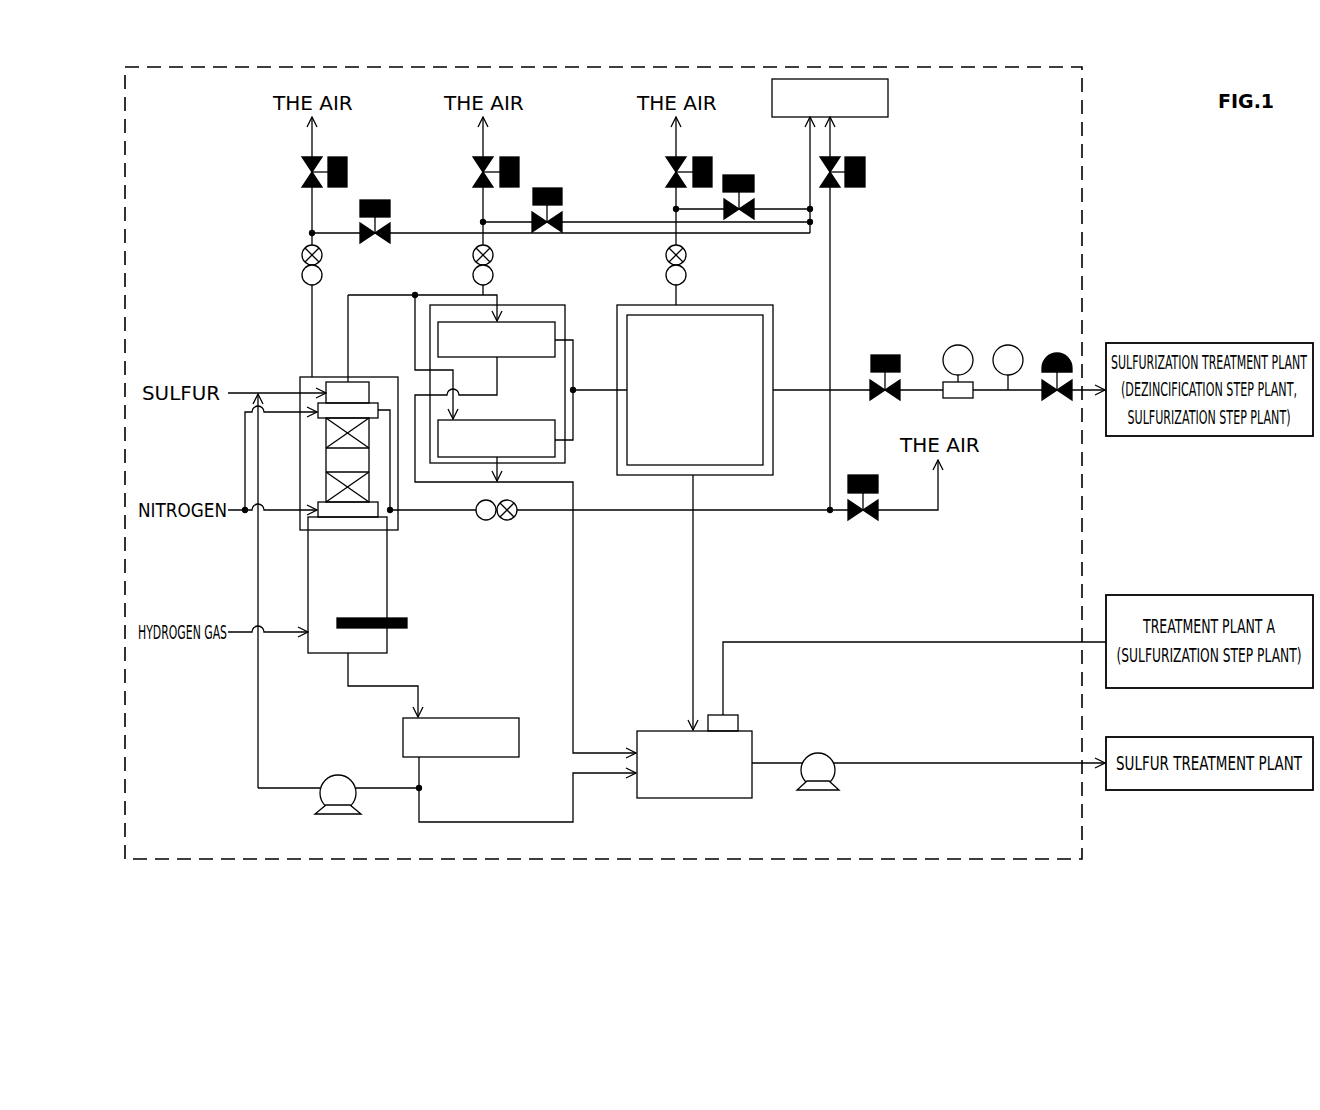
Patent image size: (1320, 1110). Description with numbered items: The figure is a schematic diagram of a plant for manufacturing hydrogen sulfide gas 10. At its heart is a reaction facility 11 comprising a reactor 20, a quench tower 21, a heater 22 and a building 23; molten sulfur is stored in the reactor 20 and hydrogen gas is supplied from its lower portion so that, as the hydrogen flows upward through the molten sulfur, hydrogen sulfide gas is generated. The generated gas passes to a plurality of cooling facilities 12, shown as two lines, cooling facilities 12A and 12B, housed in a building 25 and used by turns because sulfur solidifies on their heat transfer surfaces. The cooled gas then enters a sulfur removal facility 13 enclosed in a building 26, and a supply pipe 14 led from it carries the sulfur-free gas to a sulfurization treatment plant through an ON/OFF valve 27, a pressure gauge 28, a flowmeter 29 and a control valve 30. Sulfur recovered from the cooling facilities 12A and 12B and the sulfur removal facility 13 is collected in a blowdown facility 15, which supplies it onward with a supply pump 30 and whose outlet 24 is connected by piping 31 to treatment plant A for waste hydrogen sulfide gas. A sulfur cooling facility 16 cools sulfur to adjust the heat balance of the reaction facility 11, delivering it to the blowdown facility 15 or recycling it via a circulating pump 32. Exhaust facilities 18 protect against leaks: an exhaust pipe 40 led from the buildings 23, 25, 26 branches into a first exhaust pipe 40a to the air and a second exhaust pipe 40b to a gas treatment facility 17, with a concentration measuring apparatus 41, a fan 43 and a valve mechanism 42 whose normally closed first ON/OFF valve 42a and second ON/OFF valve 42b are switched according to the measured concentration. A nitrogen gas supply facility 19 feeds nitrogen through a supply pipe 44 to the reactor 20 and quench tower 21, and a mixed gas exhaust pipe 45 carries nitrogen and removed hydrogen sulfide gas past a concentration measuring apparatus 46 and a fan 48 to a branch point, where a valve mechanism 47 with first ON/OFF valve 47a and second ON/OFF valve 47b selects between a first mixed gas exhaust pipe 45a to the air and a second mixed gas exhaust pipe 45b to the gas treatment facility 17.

The plant for manufacturing hydrogen sulfide gas 10 is at (1032, 141).
The reaction facility 11 is at (376, 474).
The cooling facilities 12 is at (492, 507).
The cooling facility 12A is at (540, 383).
The cooling facility 12B is at (507, 358).
The sulfur removal facility 13 is at (626, 458).
The supply pipe 14 is at (845, 388).
The blowdown facility 15 is at (728, 800).
The sulfur cooling facility 16 is at (487, 717).
The gas treatment facility 17 is at (888, 98).
The exhaust facilities 18 is at (510, 223).
The nitrogen gas supply facility 19 is at (309, 604).
The reactor 20 is at (388, 577).
The quench tower 21 is at (325, 460).
The heater 22 is at (408, 623).
The building 23 is at (328, 376).
The outlet 24 is at (739, 723).
The building 25 is at (552, 304).
The building 26 is at (677, 368).
The ON/OFF valve 27 is at (885, 354).
The pressure gauge 28 is at (1008, 344).
The flowmeter 29 is at (958, 344).
The control valve 30 is at (1055, 354).
The piping 31 is at (828, 641).
The circulating pump 32 is at (338, 774).
The exhaust pipe 40 is at (465, 247).
The first exhaust pipe 40a is at (310, 133).
The second exhaust pipe 40b is at (329, 231).
The concentration measuring apparatus 41 is at (322, 275).
The valve mechanism 42 is at (546, 156).
The first ON/OFF valve 42a is at (347, 162).
The second ON/OFF valve 42b is at (378, 200).
The fan 43 is at (322, 255).
The supply pipe 44 is at (244, 457).
The mixed gas exhaust pipe 45 is at (390, 428).
The first mixed gas exhaust pipe 45a is at (905, 508).
The second mixed gas exhaust pipe 45b is at (830, 272).
The concentration measuring apparatus 46 is at (486, 521).
The valve mechanism 47 is at (890, 338).
The first ON/OFF valve 47a is at (857, 474).
The second ON/OFF valve 47b is at (865, 172).
The fan 48 is at (507, 521).